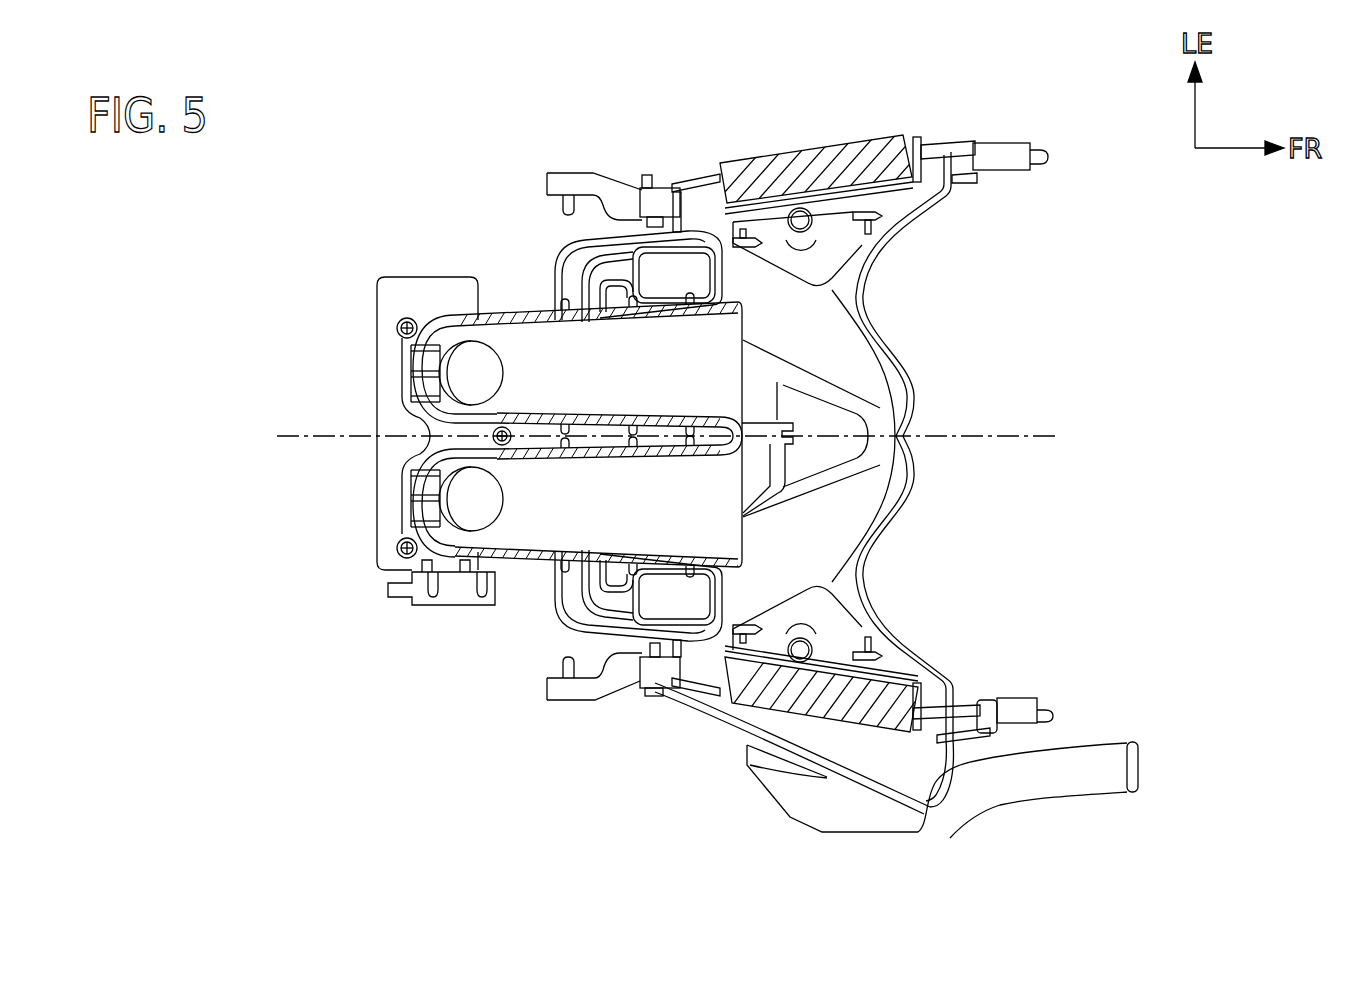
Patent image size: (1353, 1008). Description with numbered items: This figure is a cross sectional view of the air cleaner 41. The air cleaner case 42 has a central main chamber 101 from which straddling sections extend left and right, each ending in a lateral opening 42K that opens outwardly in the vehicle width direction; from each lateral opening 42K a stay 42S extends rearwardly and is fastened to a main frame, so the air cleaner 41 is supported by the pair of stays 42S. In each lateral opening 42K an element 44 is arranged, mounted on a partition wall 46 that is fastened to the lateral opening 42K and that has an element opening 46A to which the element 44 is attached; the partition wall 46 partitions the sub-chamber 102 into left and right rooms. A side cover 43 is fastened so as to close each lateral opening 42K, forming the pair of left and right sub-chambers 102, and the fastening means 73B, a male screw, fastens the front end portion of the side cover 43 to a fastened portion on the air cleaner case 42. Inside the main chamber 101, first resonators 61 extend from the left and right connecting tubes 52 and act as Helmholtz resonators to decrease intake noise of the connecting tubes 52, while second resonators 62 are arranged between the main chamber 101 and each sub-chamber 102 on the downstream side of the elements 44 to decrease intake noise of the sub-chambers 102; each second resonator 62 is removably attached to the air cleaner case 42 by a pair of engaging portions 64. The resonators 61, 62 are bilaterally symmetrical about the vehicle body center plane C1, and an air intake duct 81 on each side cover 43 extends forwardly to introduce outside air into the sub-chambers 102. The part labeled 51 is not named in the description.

The air cleaner 41 is at (482, 197).
The air cleaner case 42 is at (932, 404).
The stay 42S is at (570, 172).
The lateral opening 42K is at (937, 143).
The side cover 43 is at (917, 813).
The element 44 is at (812, 152).
The partition wall 46 is at (918, 135).
The element opening 46A is at (740, 152).
The mounting plate 51 is at (390, 295).
The connecting tube 52 is at (763, 377).
The first resonator 61 is at (722, 273).
The second resonator 62 is at (810, 285).
The engaging portion 64 is at (882, 214).
The fastening means 73B is at (1032, 797).
The air intake duct 81 is at (1123, 777).
The main chamber 101 is at (885, 480).
The sub-chamber 102 is at (885, 758).
The vehicle body center plane C1 is at (684, 437).